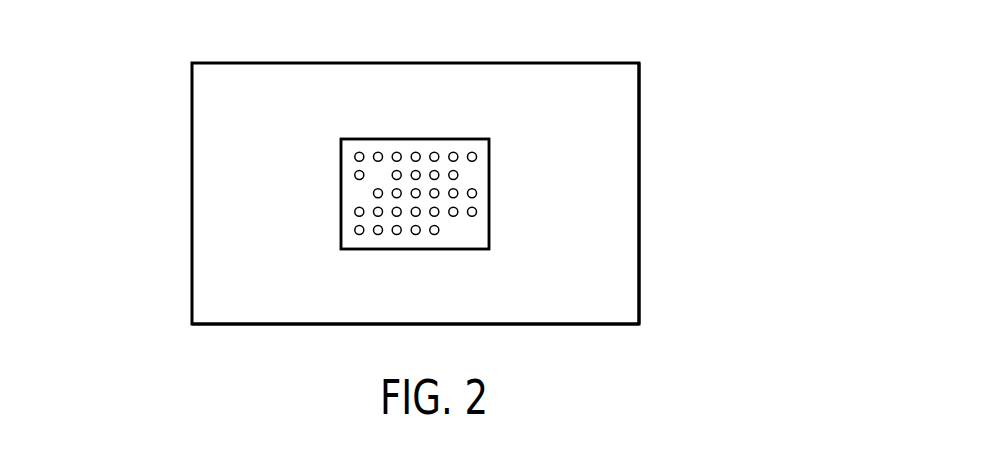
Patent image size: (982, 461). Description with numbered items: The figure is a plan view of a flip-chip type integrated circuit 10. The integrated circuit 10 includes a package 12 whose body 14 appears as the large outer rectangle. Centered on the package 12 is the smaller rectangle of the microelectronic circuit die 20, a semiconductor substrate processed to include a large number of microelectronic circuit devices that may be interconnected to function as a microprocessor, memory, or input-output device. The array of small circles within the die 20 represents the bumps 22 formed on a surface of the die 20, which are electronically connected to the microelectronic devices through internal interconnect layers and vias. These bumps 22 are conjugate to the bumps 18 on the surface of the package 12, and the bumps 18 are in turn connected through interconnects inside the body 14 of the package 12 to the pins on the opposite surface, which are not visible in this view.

The integrated circuit 10 is at (172, 117).
The package 12 is at (658, 142).
The body 14 is at (639, 229).
The bumps 18 is at (457, 137).
The bumps 22 is at (415, 194).
The microelectronic circuit die 20 is at (489, 193).